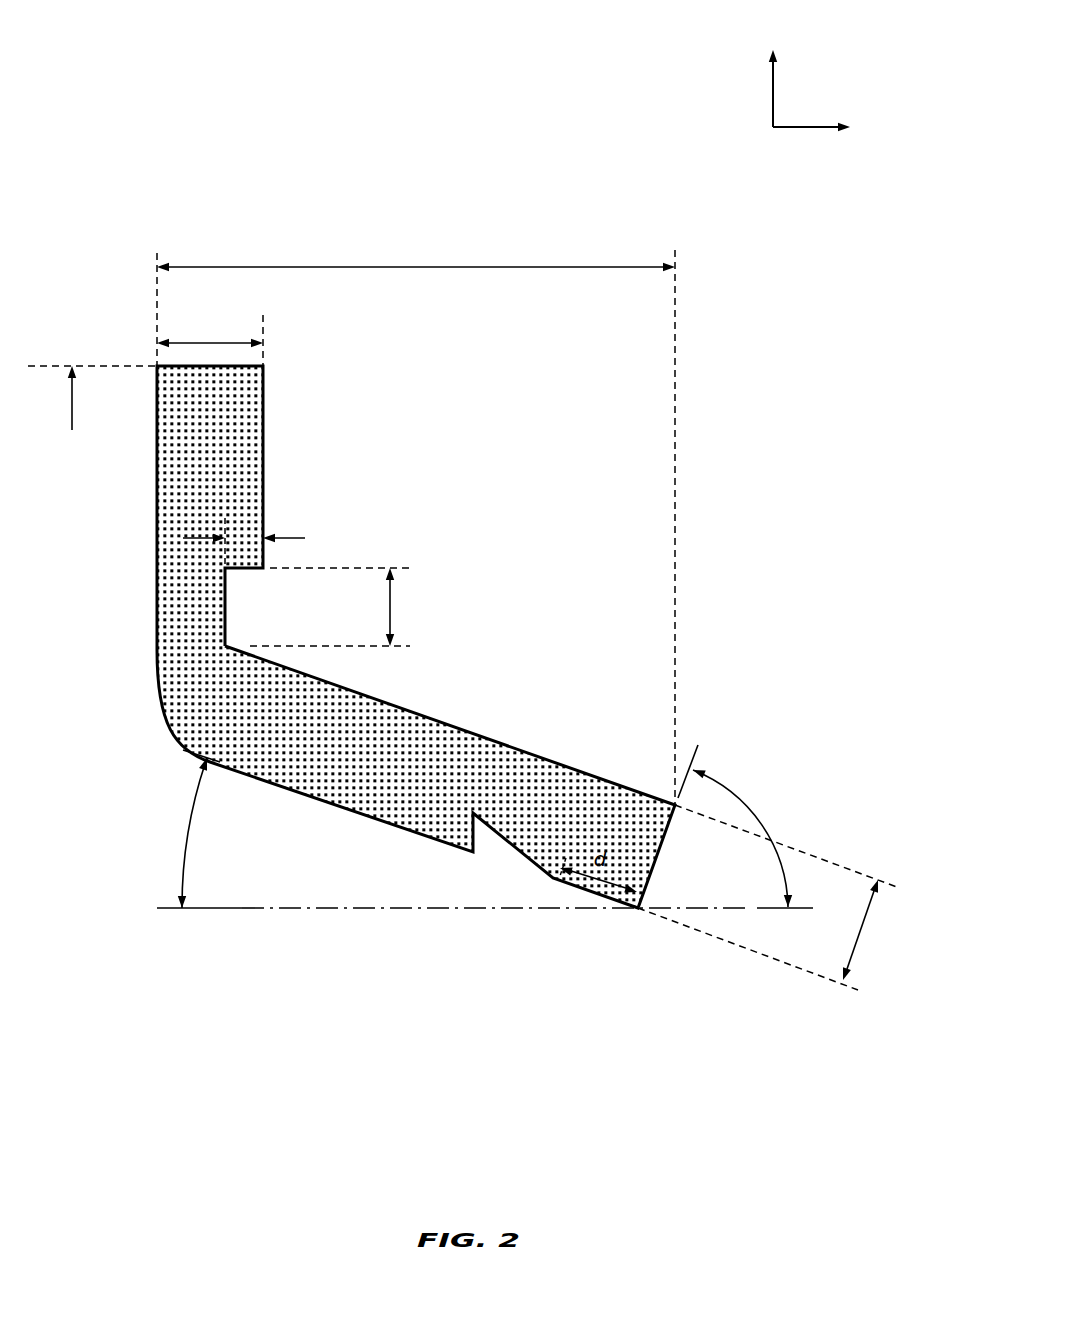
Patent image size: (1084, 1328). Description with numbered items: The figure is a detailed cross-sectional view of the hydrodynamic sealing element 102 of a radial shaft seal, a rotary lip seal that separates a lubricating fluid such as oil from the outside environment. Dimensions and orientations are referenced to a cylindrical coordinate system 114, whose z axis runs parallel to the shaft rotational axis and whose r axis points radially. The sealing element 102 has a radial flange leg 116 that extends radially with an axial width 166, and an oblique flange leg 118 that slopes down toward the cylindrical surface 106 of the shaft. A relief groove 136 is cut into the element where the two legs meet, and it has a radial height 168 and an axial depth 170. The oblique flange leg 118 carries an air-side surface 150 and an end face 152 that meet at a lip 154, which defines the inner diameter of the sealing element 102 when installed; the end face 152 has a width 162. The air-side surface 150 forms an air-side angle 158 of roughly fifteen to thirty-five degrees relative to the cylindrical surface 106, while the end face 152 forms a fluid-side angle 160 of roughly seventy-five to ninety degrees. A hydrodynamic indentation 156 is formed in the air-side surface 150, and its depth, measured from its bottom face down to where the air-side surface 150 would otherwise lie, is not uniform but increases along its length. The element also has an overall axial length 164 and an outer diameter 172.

The hydrodynamic sealing element 102 is at (156, 148).
The cylindrical surface 106 is at (362, 918).
The cylindrical coordinate system 114 is at (829, 56).
The radial flange leg 116 is at (228, 477).
The oblique flange leg 118 is at (453, 793).
The relief groove 136 is at (252, 603).
The air-side surface 150 is at (304, 806).
The end face 152 is at (662, 879).
The lip 154 is at (635, 921).
The hydrodynamic indentation 156 is at (494, 856).
The air-side angle 158 is at (540, 806).
The fluid-side angle 160 is at (746, 826).
The width 162 is at (767, 897).
The overall axial length 164 is at (416, 520).
The axial width 166 is at (210, 338).
The radial height 168 is at (338, 607).
The axial depth 170 is at (262, 543).
The outer diameter 172 is at (92, 398).